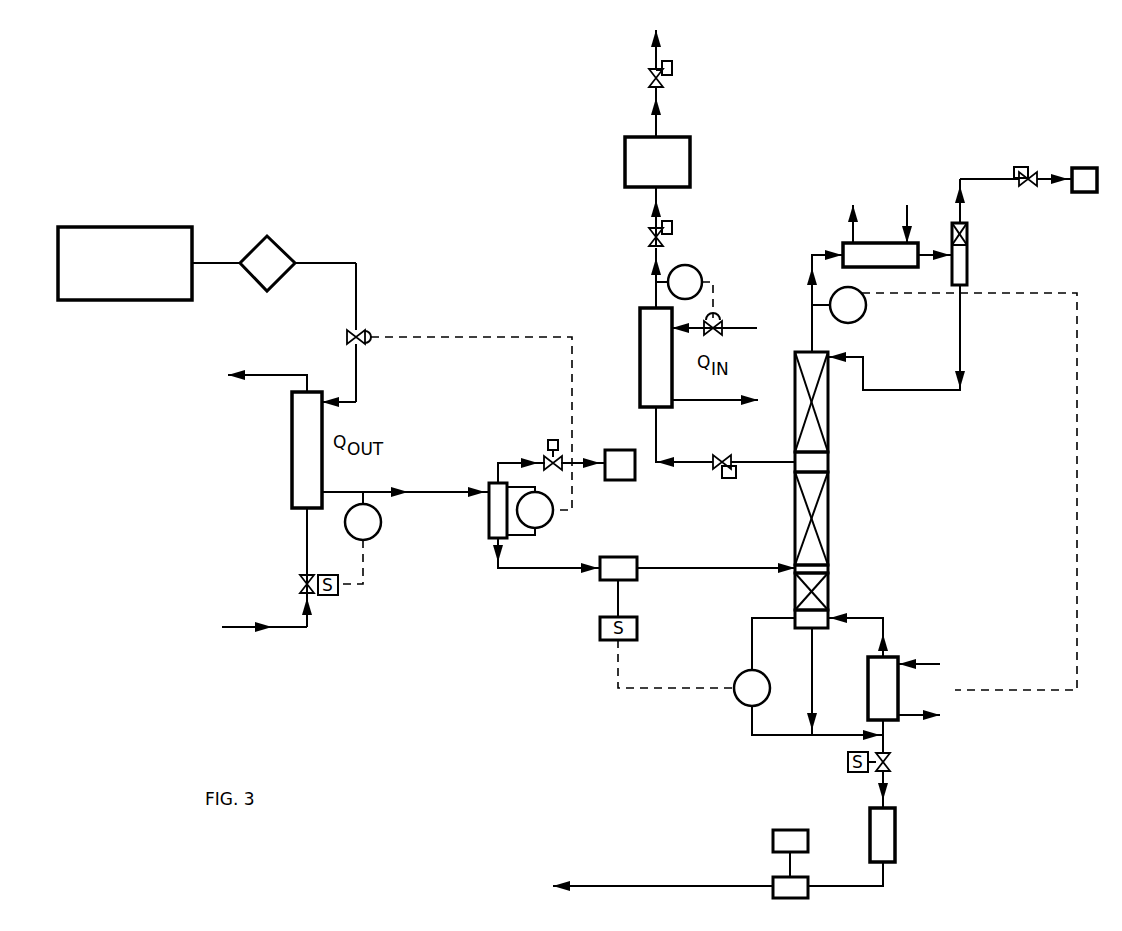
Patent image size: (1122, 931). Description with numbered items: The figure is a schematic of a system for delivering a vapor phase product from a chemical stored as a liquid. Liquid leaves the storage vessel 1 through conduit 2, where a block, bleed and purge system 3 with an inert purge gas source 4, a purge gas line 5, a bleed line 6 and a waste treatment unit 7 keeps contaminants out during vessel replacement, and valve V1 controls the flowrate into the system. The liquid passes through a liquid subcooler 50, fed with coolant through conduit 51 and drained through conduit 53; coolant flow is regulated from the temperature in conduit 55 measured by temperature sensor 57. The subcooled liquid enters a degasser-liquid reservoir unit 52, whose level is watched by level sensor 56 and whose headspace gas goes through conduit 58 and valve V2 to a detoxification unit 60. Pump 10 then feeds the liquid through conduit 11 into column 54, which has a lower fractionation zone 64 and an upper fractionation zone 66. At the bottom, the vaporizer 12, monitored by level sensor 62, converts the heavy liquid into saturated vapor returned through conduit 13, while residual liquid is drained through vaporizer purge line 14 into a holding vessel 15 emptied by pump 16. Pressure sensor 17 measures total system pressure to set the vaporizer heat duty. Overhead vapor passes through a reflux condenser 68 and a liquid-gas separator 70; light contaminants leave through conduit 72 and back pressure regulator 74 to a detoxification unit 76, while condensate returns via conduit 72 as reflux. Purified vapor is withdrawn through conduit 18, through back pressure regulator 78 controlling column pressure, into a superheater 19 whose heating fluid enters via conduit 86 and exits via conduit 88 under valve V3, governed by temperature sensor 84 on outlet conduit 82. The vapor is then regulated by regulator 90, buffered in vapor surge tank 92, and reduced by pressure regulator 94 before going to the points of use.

The storage vessel 1 is at (131, 274).
The conduit 2 is at (219, 265).
The block, bleed and purge system 3 is at (297, 244).
The inert purge gas source 4 is at (297, 244).
The purge gas line 5 is at (297, 244).
The bleed line 6 is at (297, 244).
The waste treatment unit 7 is at (265, 236).
The valve V1 is at (360, 330).
The valve V2 is at (551, 439).
The valve V3 is at (722, 319).
The liquid subcooler 50 is at (292, 448).
The conduit 51 is at (245, 636).
The degasser-liquid reservoir unit 52 is at (489, 520).
The conduit 53 is at (286, 374).
The conduit 55 is at (430, 490).
The level sensor 56 is at (548, 525).
The temperature sensor 57 is at (382, 522).
The conduit 58 is at (502, 460).
The detoxification unit 60 is at (620, 480).
The pump 10 is at (619, 557).
The conduit 11 is at (722, 567).
The level sensor 62 is at (742, 702).
The superheater 19 is at (640, 358).
The outlet conduit 82 is at (655, 273).
The temperature sensor 84 is at (700, 268).
The conduit 86 is at (752, 328).
The conduit 88 is at (699, 400).
The regulator 90 is at (649, 229).
The vapor surge tank 92 is at (625, 163).
The pressure regulator 94 is at (672, 74).
The conduit 18 is at (767, 462).
The back pressure regulator 78 is at (729, 478).
The column 54 is at (874, 490).
The upper fractionation zone 66 is at (828, 418).
The lower fractionation zone 64 is at (828, 513).
The reflux condenser 68 is at (843, 243).
The liquid-gas separator 70 is at (967, 255).
The pressure sensor 17 is at (858, 320).
The conduit 72 is at (989, 178).
The back pressure regulator 74 is at (1025, 167).
The detoxification unit 76 is at (1087, 167).
The vaporizer 12 is at (898, 651).
The conduit 13 is at (868, 617).
The vaporizer purge line 14 is at (755, 735).
The holding vessel 15 is at (895, 838).
The pump 16 is at (773, 877).